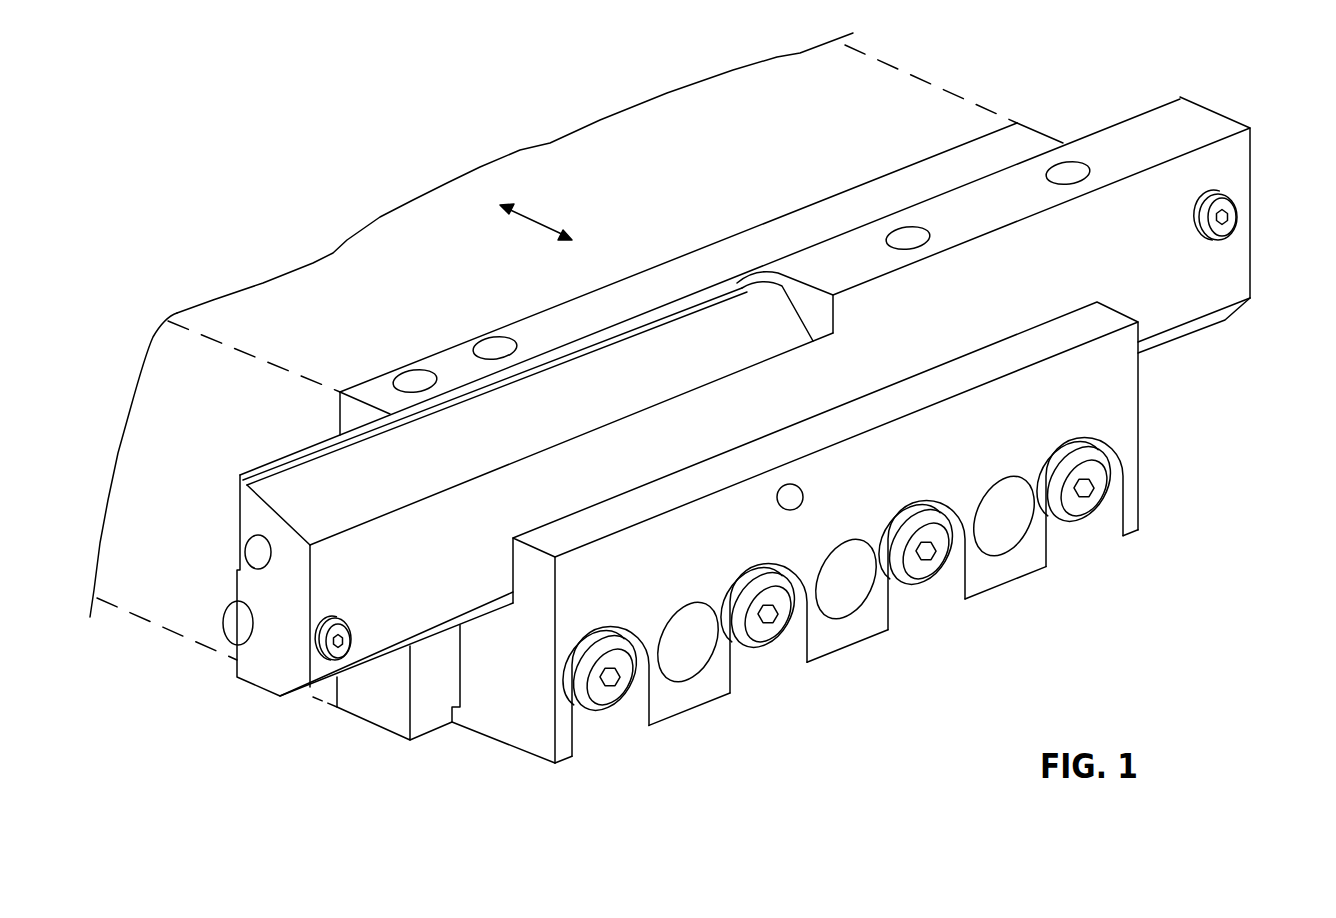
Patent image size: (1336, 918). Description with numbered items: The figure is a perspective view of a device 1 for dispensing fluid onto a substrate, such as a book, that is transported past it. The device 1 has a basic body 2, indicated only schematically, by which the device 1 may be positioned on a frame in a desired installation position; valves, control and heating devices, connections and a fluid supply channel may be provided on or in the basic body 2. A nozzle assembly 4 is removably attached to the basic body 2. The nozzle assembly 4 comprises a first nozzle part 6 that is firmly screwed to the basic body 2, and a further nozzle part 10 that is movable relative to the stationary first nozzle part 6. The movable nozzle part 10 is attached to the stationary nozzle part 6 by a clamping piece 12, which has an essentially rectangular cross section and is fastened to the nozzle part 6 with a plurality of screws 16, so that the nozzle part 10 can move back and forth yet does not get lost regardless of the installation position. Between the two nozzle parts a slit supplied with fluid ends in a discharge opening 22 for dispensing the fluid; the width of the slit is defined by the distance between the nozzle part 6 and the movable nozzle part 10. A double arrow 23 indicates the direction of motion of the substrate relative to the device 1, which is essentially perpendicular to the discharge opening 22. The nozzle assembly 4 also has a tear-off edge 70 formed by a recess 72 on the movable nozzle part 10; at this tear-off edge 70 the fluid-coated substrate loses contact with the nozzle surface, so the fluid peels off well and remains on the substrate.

The device 1 is at (779, 407).
The basic body 2 is at (350, 305).
The nozzle assembly 4 is at (779, 397).
The first nozzle part 6 is at (1035, 142).
The movable nozzle part 10 is at (1253, 260).
The clamping piece 12 is at (867, 542).
The screws 16 is at (603, 703).
The discharge opening 22 is at (512, 370).
The double arrow 23 is at (533, 217).
The tear-off edge 70 is at (807, 341).
The recess 72 is at (775, 324).